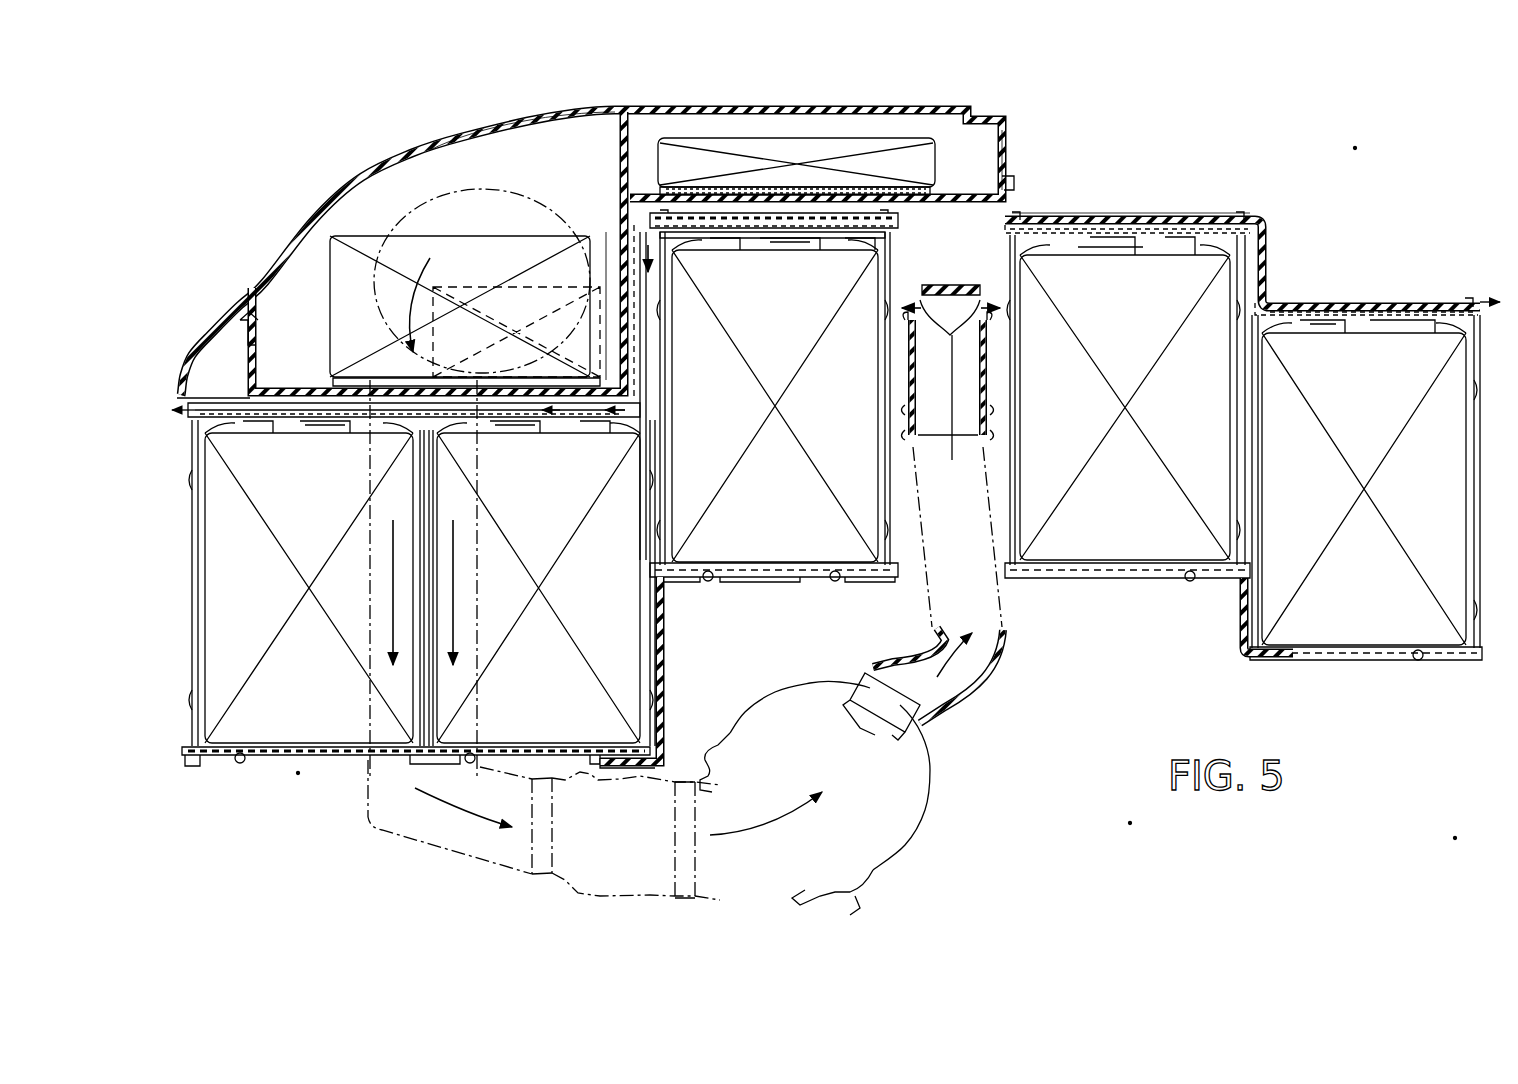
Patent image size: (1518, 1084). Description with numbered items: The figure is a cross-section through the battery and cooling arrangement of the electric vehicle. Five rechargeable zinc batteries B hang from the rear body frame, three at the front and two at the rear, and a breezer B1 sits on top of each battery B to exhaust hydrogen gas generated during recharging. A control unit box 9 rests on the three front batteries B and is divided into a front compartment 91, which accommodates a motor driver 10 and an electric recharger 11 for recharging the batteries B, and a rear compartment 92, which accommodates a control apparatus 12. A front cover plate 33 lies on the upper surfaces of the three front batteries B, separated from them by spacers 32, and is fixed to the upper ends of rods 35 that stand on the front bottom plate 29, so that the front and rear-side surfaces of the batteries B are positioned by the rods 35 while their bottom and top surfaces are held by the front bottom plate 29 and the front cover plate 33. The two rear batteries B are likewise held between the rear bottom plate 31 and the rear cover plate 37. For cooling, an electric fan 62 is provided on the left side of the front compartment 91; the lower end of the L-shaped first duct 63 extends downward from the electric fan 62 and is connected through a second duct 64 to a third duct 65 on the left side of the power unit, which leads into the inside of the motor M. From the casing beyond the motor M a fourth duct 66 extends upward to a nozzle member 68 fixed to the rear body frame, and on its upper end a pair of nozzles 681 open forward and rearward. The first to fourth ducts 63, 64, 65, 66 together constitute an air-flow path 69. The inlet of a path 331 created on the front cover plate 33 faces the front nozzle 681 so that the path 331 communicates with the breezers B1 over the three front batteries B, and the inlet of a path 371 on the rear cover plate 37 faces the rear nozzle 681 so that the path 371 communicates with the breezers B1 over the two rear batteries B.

The control unit box 9 is at (308, 208).
The front compartment 91 is at (416, 158).
The rear compartment 92 is at (995, 156).
The motor driver 10 is at (332, 316).
The electric recharger 11 is at (607, 255).
The control apparatus 12 is at (928, 160).
The electric fan 62 is at (440, 200).
The front cover plate 33 is at (647, 372).
The path 331 is at (835, 240).
The rear cover plate 37 is at (1270, 246).
The path 371 is at (1082, 214).
The rods 35 is at (199, 627).
The spacers 32 is at (222, 440).
The rechargeable zinc batteries B is at (308, 709).
The breezer B1 is at (336, 432).
The rear bottom plate 31 is at (1236, 623).
The front bottom plate 29 is at (668, 652).
The air-flow path 69 is at (485, 570).
The nozzle member 68 is at (993, 377).
The nozzles 681 is at (982, 290).
The fourth duct 66 is at (985, 672).
The third duct 65 is at (766, 695).
The motor M is at (833, 696).
The first duct 63 is at (486, 862).
The second duct 64 is at (584, 895).